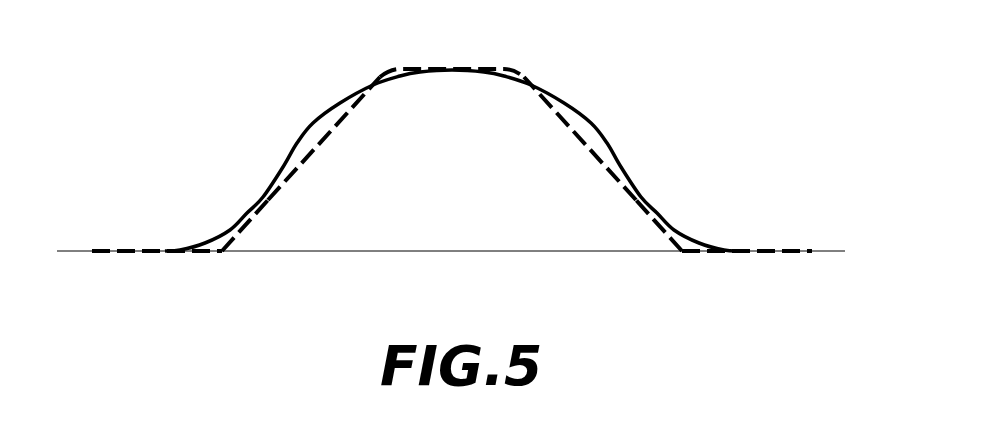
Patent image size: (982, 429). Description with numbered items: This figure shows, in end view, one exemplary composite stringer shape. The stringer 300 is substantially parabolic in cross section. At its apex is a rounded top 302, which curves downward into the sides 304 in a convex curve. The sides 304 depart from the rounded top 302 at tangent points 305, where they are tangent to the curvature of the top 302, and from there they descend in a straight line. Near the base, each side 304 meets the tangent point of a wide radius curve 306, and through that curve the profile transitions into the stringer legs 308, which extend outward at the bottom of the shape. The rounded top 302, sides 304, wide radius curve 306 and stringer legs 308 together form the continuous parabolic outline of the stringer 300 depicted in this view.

The stringer 300 is at (285, 56).
The rounded top 302 is at (465, 54).
The sides 304 is at (276, 140).
The tangent points 305 is at (273, 186).
The wide radius curve 306 is at (228, 232).
The stringer legs 308 is at (140, 249).